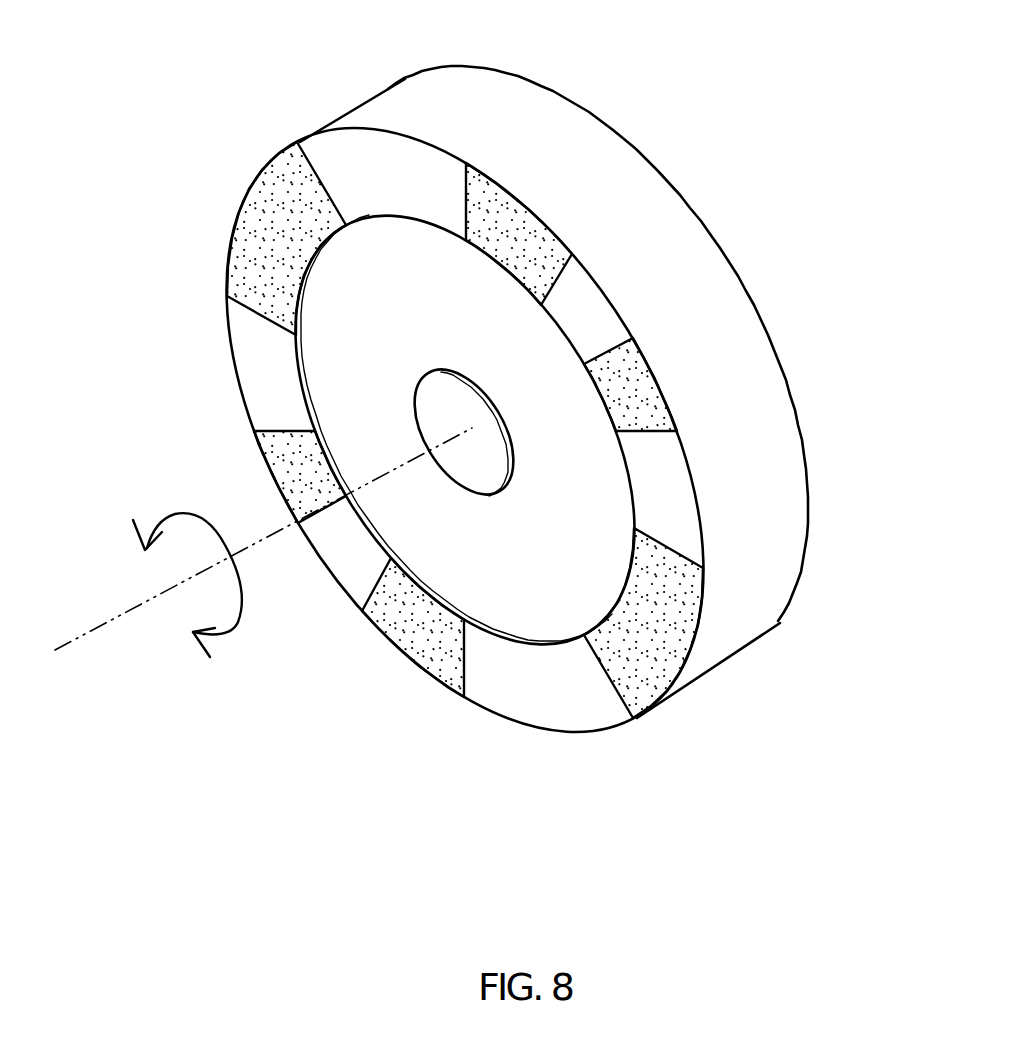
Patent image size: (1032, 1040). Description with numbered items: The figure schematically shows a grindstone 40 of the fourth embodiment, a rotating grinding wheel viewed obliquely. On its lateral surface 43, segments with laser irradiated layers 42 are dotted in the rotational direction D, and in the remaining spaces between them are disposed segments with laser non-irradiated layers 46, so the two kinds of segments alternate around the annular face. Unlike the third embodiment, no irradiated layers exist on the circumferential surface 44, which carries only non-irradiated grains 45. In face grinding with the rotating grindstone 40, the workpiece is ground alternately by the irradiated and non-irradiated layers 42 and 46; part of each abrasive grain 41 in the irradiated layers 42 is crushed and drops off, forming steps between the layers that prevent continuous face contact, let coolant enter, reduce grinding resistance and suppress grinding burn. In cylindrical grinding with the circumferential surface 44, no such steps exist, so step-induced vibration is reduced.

The grindstone 40 is at (487, 417).
The abrasive grain 41 is at (503, 376).
The laser irradiated layer 42 is at (468, 173).
The lateral surface 43 is at (550, 712).
The circumferential surface 44 is at (553, 118).
The non-irradiated grain 45 is at (718, 696).
The laser non-irradiated layer 46 is at (723, 652).
The rotational direction D is at (150, 530).